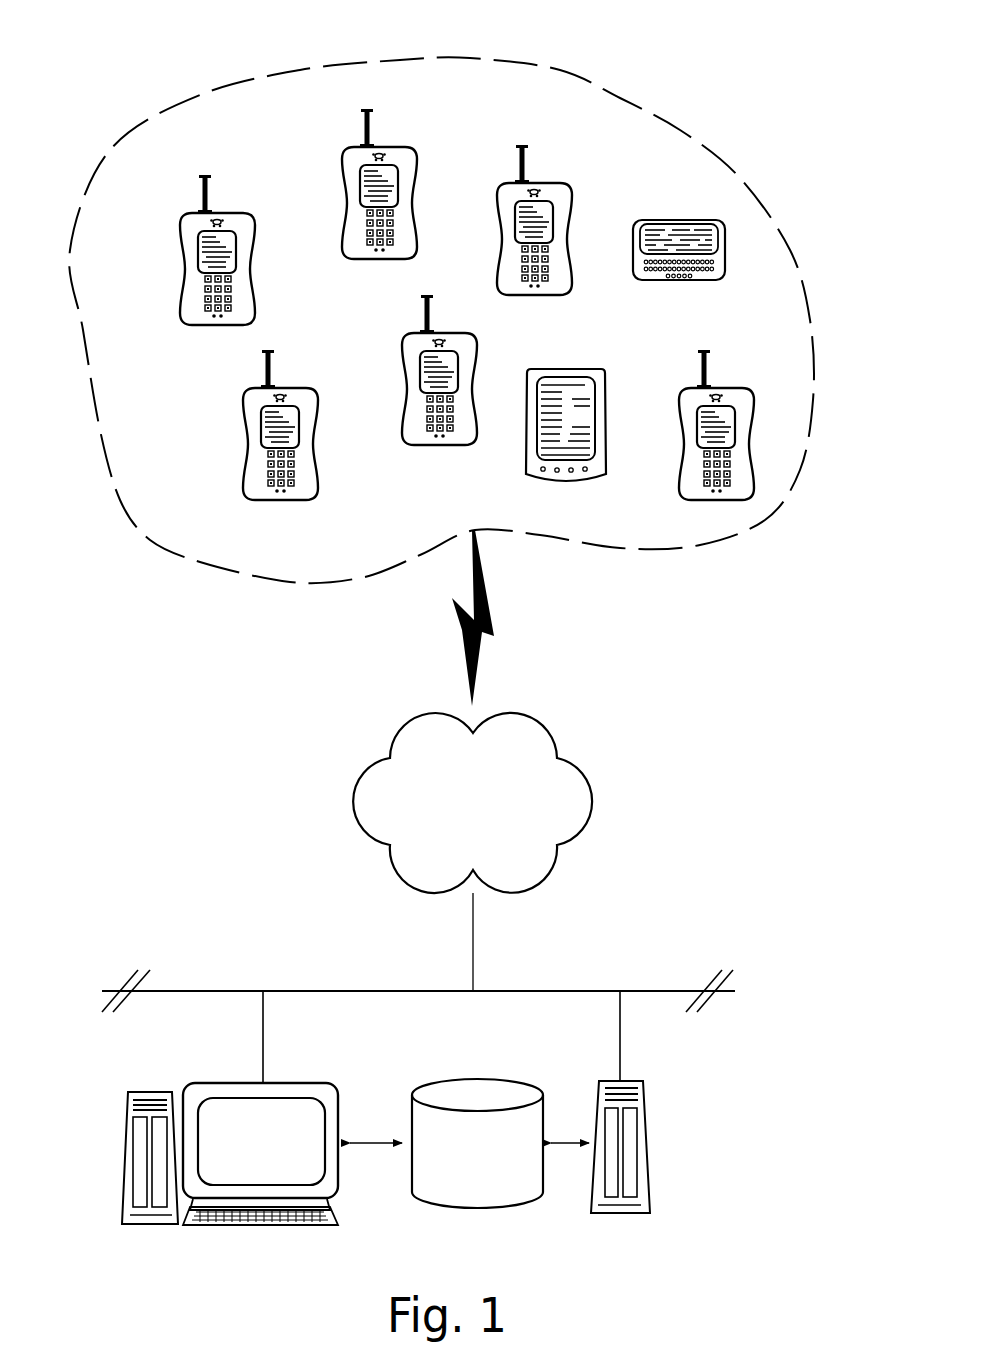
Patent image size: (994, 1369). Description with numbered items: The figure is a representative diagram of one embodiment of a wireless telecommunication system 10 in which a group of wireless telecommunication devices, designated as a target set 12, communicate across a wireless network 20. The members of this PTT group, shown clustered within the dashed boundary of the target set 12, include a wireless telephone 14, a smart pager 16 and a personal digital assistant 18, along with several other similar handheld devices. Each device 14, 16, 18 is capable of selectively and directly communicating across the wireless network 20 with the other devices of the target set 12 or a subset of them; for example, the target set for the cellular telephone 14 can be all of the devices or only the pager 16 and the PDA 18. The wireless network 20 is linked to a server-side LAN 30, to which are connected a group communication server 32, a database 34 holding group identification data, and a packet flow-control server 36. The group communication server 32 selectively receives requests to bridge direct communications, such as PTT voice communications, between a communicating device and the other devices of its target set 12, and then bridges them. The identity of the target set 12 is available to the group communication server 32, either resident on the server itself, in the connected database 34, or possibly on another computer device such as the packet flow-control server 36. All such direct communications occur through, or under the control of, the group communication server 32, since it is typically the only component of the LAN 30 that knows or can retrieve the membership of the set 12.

The wireless telecommunication system 10 is at (747, 75).
The target set 12 is at (170, 547).
The wireless telephone 14 is at (410, 145).
The smart pager 16 is at (685, 280).
The personal digital assistant 18 is at (527, 446).
The wireless network 20 is at (593, 803).
The server-side LAN 30 is at (227, 991).
The group communication server 32 is at (230, 1083).
The database 34 is at (412, 1175).
The packet flow-control server 36 is at (643, 1188).